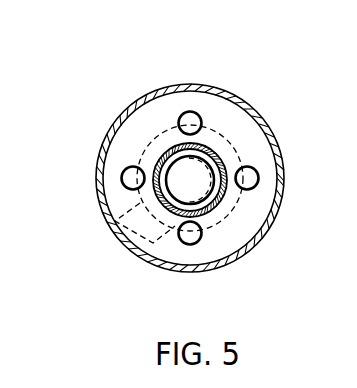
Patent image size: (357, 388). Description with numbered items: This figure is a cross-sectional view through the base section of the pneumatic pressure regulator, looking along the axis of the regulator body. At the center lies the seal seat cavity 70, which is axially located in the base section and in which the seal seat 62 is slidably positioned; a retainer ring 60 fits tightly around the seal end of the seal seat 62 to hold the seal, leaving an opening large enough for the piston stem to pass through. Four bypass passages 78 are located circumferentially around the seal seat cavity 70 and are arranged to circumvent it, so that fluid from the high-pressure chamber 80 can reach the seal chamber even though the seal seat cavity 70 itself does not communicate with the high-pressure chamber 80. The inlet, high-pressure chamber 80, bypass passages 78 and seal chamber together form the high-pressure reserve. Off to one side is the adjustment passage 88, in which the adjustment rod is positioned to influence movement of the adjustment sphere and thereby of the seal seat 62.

The retainer ring 60 is at (162, 192).
The seal seat 62 is at (210, 203).
The seal seat cavity 70 is at (218, 160).
The bypass passages 78 is at (193, 120).
The high-pressure chamber 80 is at (163, 135).
The adjustment passage 88 is at (137, 227).